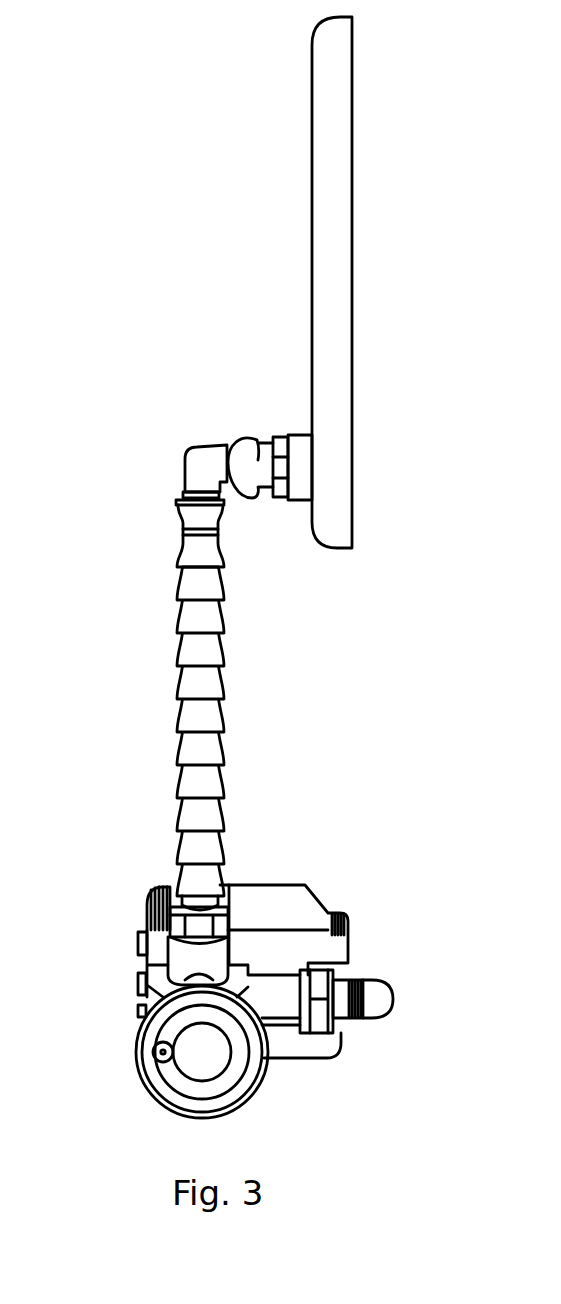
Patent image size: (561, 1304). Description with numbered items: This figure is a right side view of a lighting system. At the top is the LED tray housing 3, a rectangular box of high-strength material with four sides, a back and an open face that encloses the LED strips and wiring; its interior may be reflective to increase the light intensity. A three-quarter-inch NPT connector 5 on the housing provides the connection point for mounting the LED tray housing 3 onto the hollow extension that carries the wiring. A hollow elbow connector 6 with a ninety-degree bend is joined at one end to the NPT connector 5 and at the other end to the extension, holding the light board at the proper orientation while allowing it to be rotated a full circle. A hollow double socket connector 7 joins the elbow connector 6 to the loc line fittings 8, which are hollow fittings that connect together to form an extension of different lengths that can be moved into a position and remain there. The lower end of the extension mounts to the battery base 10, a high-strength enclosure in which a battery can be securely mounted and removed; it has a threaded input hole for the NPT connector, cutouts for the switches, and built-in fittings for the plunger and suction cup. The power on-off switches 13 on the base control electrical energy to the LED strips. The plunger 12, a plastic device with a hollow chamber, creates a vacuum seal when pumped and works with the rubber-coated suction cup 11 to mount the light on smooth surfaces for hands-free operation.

The LED tray housing 3 is at (312, 189).
The NPT connector 5 is at (280, 435).
The elbow connector 6 is at (184, 455).
The double socket connector 7 is at (178, 514).
The loc line fittings 8 is at (177, 655).
The battery base 10 is at (300, 885).
The suction cup 11 is at (135, 1040).
The plunger 12 is at (370, 976).
The power on-off switches 13 is at (137, 946).